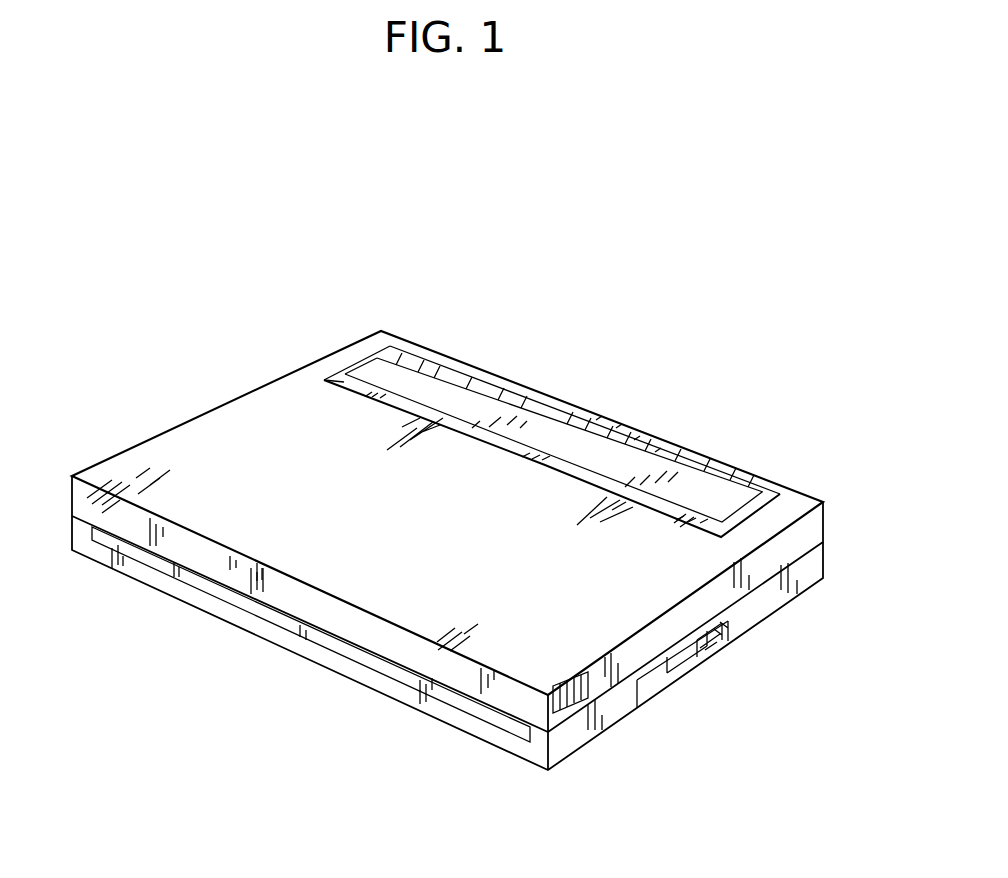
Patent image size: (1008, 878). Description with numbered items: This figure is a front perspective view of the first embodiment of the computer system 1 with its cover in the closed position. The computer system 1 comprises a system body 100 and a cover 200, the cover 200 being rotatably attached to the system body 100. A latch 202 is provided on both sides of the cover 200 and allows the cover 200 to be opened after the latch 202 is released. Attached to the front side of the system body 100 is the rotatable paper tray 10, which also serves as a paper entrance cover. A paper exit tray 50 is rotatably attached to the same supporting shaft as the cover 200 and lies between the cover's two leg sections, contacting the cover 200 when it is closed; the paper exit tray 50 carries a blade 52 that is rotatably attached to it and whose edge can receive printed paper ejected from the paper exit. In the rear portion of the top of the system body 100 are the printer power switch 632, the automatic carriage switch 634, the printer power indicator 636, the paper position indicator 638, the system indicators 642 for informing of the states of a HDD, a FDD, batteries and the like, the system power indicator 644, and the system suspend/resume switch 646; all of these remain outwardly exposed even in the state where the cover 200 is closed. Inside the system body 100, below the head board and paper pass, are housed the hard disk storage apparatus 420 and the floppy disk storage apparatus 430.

The computer system 1 is at (168, 364).
The rotatable paper tray 10 is at (348, 652).
The paper exit tray 50 is at (395, 374).
The blade 52 is at (399, 381).
The system body 100 is at (805, 569).
The cover 200 is at (811, 526).
The latch 202 is at (578, 703).
The hard disk storage apparatus 420 is at (572, 742).
The floppy disk storage apparatus 430 is at (682, 666).
The printer power switch 632 is at (423, 360).
The automatic carriage switch 634 is at (455, 378).
The printer power indicator 636 is at (486, 385).
The paper position indicator 638 is at (523, 393).
The system indicators 642 is at (651, 451).
The system power indicator 644 is at (744, 484).
The system suspend/resume switch 646 is at (704, 468).